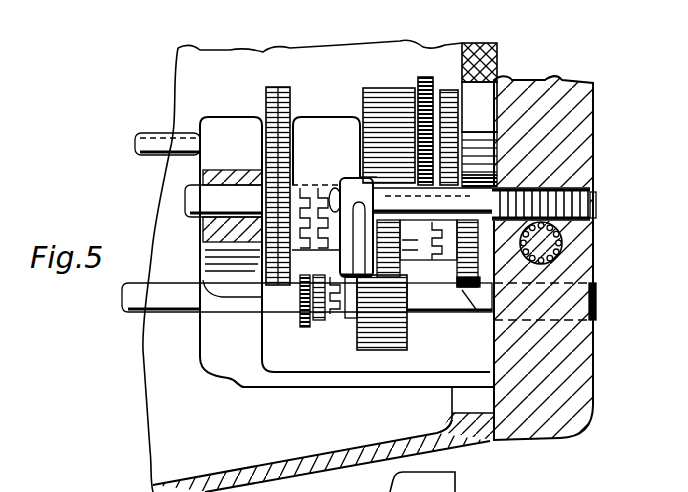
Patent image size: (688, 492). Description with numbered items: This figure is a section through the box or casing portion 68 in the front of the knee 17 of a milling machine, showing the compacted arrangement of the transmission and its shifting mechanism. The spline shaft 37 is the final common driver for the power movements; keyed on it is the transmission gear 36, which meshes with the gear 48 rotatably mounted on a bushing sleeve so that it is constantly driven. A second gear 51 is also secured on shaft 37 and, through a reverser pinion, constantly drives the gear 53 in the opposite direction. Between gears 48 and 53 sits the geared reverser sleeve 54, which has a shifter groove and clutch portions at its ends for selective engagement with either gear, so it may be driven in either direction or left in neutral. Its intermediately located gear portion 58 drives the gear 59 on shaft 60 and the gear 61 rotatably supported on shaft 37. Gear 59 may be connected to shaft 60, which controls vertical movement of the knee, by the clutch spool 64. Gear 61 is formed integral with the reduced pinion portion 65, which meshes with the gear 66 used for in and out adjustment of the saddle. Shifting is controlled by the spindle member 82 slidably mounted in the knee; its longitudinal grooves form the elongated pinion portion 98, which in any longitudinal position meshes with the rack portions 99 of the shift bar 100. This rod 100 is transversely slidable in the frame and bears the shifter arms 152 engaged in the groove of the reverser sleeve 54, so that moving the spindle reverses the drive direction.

The knee 17 is at (172, 450).
The transmission gear 36 is at (275, 110).
The spline shaft 37 is at (140, 137).
The gear 48 is at (240, 230).
The second gear 51 is at (478, 57).
The gear 53 is at (413, 283).
The geared reverser sleeve 54 is at (316, 280).
The gear portion 58 is at (447, 317).
The gear 59 is at (392, 352).
The shaft 60 is at (123, 300).
The gear 61 is at (397, 115).
The clutch spool 64 is at (300, 322).
The reduced pinion portion 65 is at (445, 88).
The gear 66 is at (430, 78).
The box or casing portion 68 is at (577, 93).
The spindle member 82 is at (562, 240).
The elongated pinion portion 98 is at (562, 249).
The rack portions 99 is at (549, 188).
The shift bar 100 is at (592, 200).
The shifter arms 152 is at (355, 177).